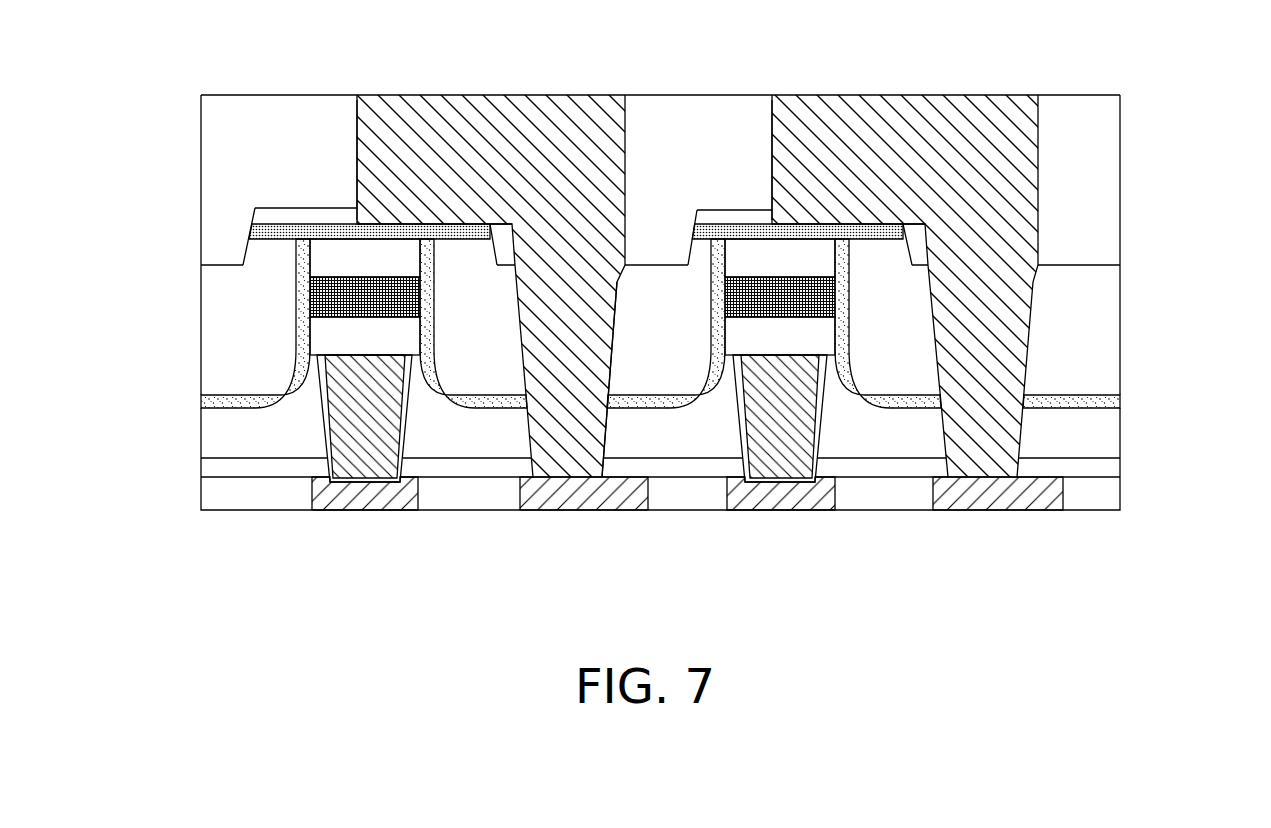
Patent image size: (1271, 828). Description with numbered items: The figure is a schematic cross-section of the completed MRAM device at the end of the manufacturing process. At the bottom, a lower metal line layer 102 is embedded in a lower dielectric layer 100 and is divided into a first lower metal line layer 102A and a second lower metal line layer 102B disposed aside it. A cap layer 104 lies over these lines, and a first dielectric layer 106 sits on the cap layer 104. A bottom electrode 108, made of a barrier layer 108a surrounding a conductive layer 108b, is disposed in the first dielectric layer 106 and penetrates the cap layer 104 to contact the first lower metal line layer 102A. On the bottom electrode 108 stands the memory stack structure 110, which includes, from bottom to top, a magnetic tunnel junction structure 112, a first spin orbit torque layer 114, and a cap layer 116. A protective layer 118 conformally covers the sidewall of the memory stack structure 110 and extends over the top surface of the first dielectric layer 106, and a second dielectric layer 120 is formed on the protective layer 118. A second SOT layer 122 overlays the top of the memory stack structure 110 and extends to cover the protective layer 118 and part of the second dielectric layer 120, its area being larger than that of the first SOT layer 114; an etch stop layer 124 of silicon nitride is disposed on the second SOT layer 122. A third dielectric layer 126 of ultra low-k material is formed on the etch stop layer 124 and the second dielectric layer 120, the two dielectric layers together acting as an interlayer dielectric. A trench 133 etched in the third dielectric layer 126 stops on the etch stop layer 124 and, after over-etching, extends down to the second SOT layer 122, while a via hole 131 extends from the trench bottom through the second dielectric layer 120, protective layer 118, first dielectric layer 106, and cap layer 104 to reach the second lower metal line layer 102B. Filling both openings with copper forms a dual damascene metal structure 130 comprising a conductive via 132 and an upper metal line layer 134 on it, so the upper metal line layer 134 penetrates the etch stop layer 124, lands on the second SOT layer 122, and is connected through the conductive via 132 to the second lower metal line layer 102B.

The lower dielectric layer 100 is at (1108, 493).
The lower metal line layer 102 is at (687, 528).
The first lower metal line layer 102A is at (362, 495).
The second lower metal line layer 102B is at (578, 495).
The cap layer 104 is at (1108, 465).
The first dielectric layer 106 is at (1108, 430).
The bottom electrode 108 is at (437, 419).
The barrier layer 108a is at (328, 440).
The conductive layer 108b is at (340, 418).
The memory stack structure 110 is at (452, 303).
The magnetic tunnel junction structure 112 is at (320, 327).
The first spin orbit torque layer 114 is at (320, 298).
The cap layer 116 is at (320, 267).
The protective layer 118 is at (1105, 403).
The second dielectric layer 120 is at (1108, 330).
The second SOT layer 122 is at (267, 230).
The etch stop layer 124 is at (265, 215).
The third dielectric layer 126 is at (1108, 118).
The dual damascene metal structure 130 is at (807, 257).
The via hole 131 is at (628, 314).
The conductive via 132 is at (565, 318).
The trench 133 is at (348, 150).
The upper metal line layer 134 is at (498, 125).